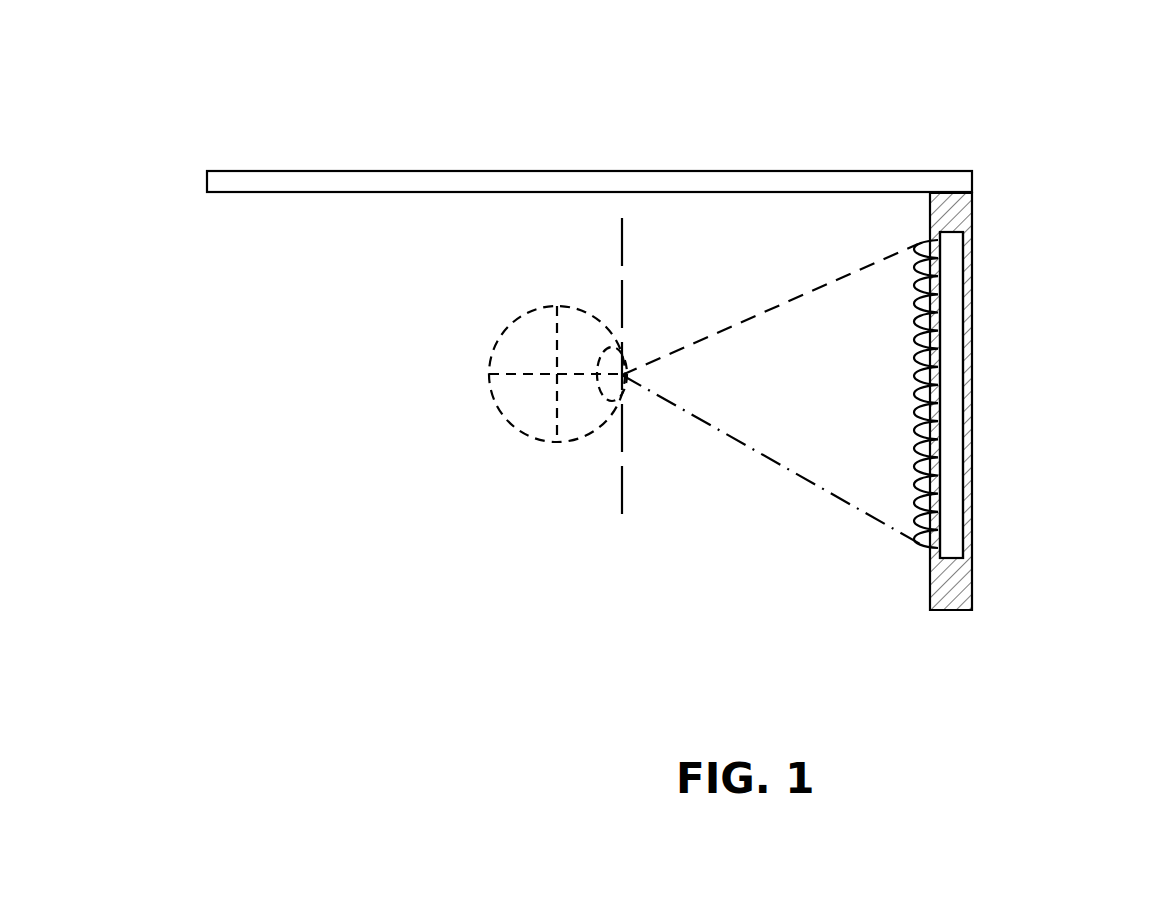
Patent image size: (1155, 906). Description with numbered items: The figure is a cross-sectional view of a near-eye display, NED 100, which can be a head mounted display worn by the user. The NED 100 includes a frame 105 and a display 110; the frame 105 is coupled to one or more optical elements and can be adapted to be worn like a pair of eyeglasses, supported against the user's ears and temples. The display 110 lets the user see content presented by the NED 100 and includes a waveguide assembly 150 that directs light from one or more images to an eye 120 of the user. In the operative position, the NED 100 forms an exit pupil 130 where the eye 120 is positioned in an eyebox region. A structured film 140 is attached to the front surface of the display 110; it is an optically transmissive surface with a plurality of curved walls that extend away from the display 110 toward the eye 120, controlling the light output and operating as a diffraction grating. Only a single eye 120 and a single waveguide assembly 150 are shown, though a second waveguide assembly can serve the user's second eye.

The near-eye display (NED) 100 is at (330, 133).
The frame 105 is at (822, 171).
The display 110 is at (973, 490).
The eye 120 is at (518, 320).
The exit pupil 130 is at (626, 380).
The structured film 140 is at (925, 432).
The waveguide assembly 150 is at (947, 263).